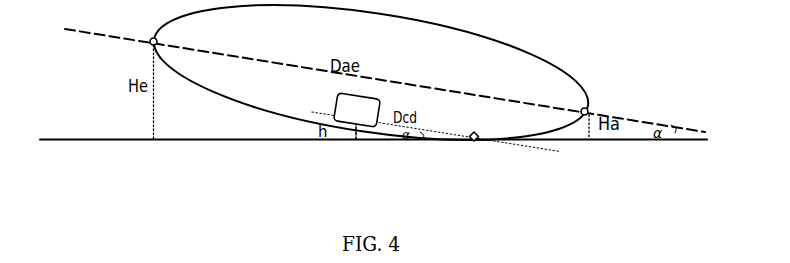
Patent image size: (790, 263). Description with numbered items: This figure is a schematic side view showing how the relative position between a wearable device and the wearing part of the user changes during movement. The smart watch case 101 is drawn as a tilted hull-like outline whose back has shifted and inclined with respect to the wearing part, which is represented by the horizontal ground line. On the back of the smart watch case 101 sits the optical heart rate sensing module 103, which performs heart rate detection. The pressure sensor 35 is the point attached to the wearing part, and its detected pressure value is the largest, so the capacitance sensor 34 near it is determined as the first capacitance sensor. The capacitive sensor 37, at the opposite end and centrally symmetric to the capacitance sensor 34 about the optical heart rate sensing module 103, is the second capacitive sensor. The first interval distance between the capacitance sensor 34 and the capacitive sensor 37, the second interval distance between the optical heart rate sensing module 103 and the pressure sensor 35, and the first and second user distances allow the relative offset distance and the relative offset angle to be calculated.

The smart watch case 101 is at (547, 62).
The capacitive sensor 37 is at (151, 38).
The capacitance sensor 34 is at (584, 115).
The pressure sensor 35 is at (473, 139).
The optical heart rate sensing module 103 is at (345, 128).